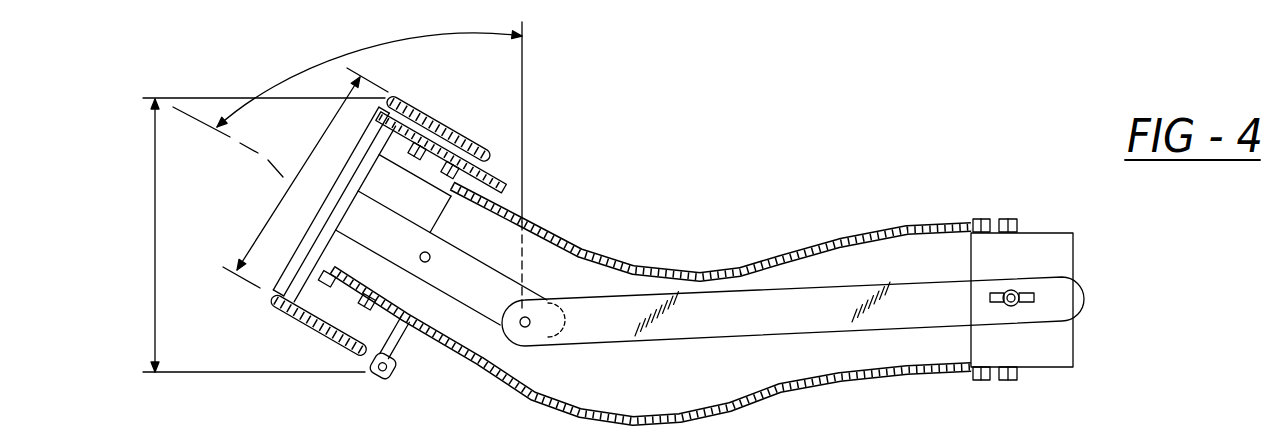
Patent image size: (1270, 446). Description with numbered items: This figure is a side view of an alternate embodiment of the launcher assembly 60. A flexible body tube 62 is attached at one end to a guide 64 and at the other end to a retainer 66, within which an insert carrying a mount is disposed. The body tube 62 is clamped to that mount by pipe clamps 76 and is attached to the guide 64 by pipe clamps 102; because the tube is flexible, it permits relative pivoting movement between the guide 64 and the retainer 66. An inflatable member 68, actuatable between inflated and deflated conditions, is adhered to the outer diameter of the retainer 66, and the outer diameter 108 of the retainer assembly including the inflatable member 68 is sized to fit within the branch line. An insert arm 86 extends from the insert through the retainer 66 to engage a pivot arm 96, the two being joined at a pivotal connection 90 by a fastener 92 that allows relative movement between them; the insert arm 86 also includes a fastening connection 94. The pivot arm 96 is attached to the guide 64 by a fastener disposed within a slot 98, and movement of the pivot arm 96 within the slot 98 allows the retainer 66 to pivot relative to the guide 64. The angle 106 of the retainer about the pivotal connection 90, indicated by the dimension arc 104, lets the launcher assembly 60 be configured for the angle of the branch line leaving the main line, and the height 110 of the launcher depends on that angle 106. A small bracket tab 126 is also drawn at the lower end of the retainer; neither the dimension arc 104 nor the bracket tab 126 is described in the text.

The launcher assembly 60 is at (651, 276).
The flexible body tube 62 is at (912, 226).
The guide 64 is at (1060, 348).
The retainer 66 is at (500, 184).
The inflatable member 68 is at (480, 140).
The pipe clamps 76 is at (330, 282).
The insert arm 86 is at (483, 307).
The pivotal connection 90 is at (530, 348).
The fastener 92 is at (547, 313).
The fastening connection 94 is at (435, 255).
The pivot arm 96 is at (735, 317).
The slot 98 is at (1041, 289).
The pipe clamps 102 is at (978, 216).
The angular dimension arc 104 is at (216, 126).
The angle 106 is at (413, 38).
The outer diameter 108 is at (278, 222).
The height 110 is at (157, 208).
The mounting bracket tab 126 is at (384, 380).